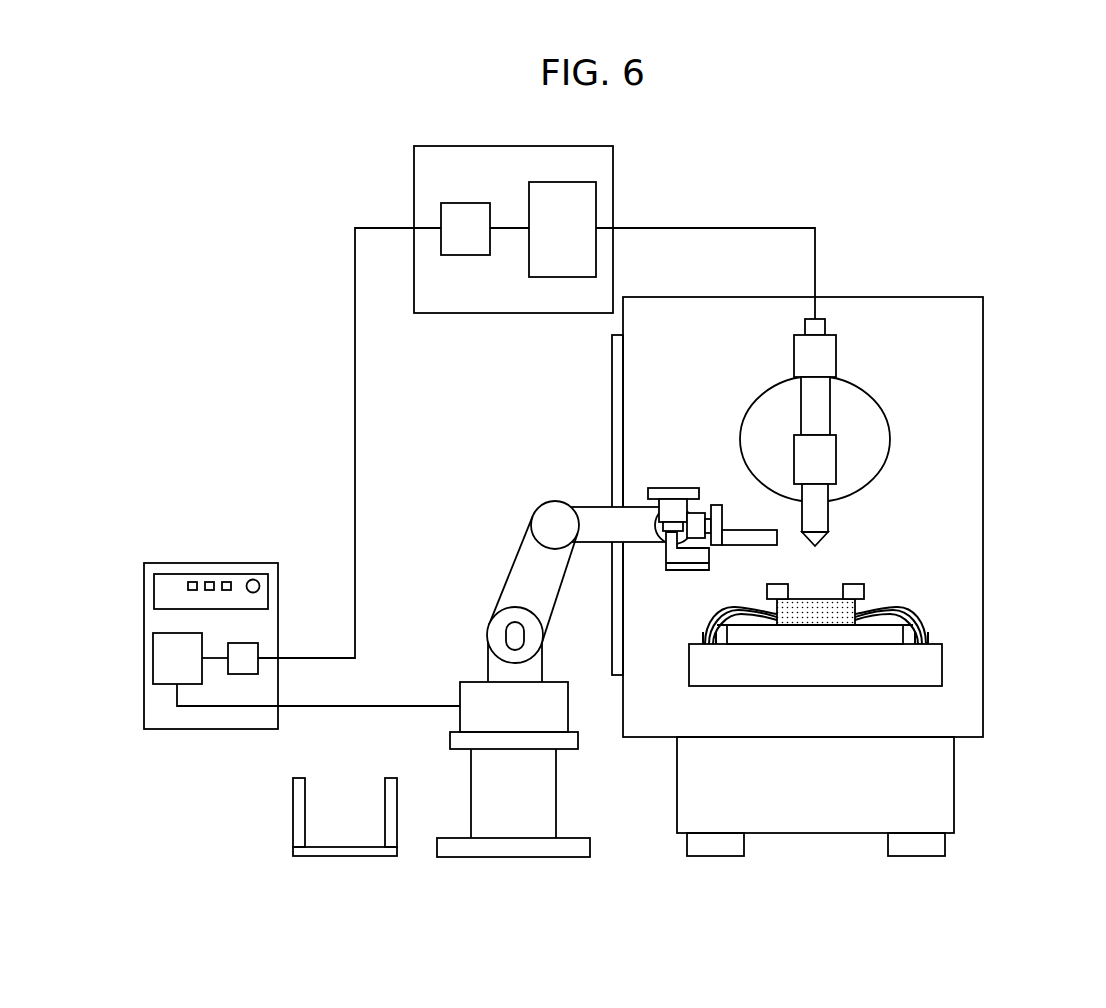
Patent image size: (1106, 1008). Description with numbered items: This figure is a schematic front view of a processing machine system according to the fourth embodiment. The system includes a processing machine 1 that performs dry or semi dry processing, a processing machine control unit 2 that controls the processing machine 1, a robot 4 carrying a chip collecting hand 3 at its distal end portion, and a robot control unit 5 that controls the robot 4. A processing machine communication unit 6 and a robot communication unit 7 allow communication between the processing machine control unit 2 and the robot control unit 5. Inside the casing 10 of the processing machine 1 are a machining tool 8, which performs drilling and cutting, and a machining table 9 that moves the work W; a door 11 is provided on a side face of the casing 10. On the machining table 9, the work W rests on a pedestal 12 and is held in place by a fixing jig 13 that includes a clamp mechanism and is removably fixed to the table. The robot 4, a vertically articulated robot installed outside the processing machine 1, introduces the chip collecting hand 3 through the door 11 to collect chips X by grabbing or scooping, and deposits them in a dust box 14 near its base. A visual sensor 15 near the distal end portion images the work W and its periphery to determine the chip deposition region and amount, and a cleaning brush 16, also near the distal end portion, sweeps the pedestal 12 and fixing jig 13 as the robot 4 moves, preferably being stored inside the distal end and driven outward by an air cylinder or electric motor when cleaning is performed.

The processing machine 1 is at (856, 288).
The processing machine control unit 2 is at (596, 200).
The chip collecting hand 3 is at (747, 538).
The robot 4 is at (535, 578).
The robot control unit 5 is at (153, 663).
The processing machine communication unit 6 is at (441, 210).
The robot communication unit 7 is at (243, 642).
The machining tool 8 is at (819, 520).
The machining table 9 is at (835, 668).
The casing 10 is at (983, 345).
The door 11 is at (612, 415).
The pedestal 12 is at (852, 633).
The fixing jig 13 is at (858, 606).
The dust box 14 is at (293, 820).
The visual sensor 15 is at (672, 508).
The cleaning brush 16 is at (687, 558).
The work W is at (802, 612).
The chips X is at (927, 618).